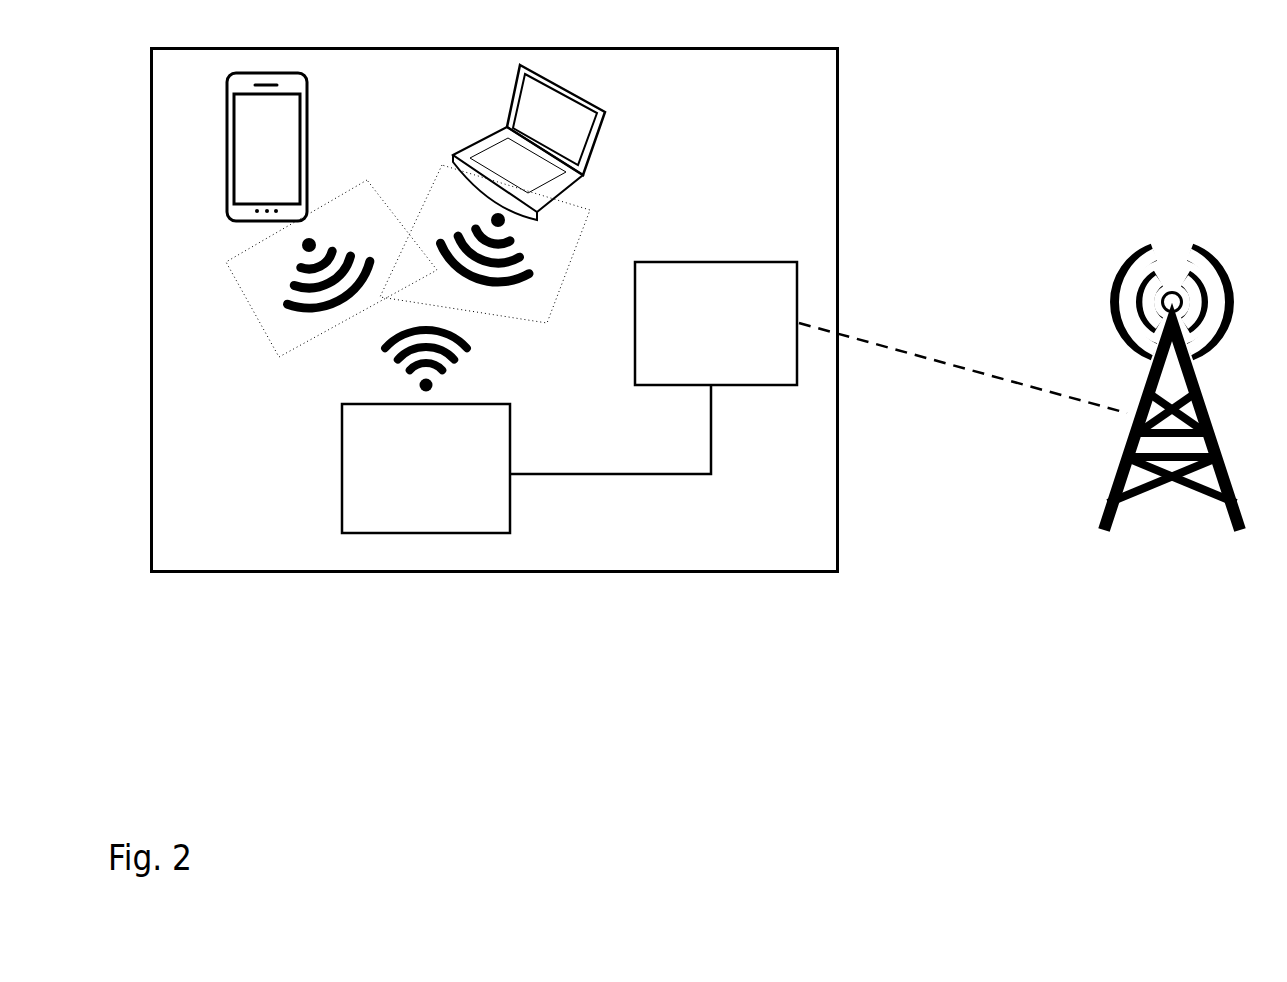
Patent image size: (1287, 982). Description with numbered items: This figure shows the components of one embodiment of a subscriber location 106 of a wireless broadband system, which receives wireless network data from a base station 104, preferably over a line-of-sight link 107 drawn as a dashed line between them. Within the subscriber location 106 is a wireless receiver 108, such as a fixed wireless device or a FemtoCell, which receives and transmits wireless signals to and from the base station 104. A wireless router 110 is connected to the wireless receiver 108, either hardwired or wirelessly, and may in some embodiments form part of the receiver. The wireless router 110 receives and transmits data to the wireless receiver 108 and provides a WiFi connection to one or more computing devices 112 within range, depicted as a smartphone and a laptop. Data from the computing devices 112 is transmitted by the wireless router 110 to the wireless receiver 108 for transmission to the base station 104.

The base station 104 is at (1100, 532).
The subscriber location 106 is at (527, 575).
The wireless link to base station 107 is at (880, 345).
The wireless receiver 108 is at (738, 336).
The wireless router 110 is at (445, 478).
The computing devices 112 is at (247, 140).